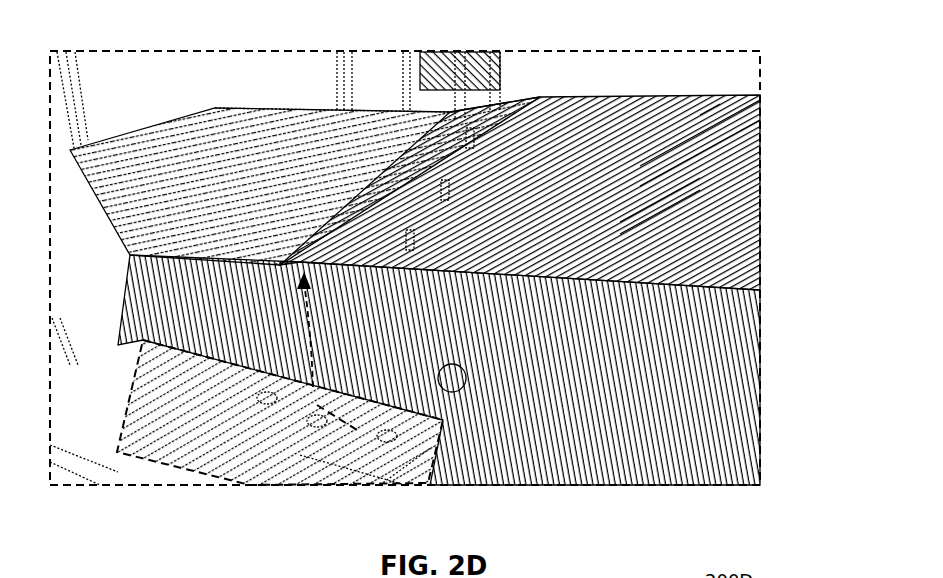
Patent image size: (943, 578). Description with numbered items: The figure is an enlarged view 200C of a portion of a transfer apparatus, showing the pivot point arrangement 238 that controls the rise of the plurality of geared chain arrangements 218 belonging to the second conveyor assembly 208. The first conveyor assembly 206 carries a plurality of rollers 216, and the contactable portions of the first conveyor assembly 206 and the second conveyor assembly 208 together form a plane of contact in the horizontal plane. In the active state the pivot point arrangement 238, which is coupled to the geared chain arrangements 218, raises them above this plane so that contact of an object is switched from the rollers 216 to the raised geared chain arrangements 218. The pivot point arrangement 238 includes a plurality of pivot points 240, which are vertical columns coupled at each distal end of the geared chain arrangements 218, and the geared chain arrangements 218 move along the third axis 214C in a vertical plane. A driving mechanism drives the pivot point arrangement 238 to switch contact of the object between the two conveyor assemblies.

The enlarged view 200C is at (762, 75).
The third axis 214C is at (303, 303).
The plurality of rollers 216 is at (621, 262).
The plurality of geared chain arrangements 218 is at (410, 245).
The first conveyor assembly 206 is at (716, 108).
The second conveyor assembly 208 is at (455, 373).
The pivot point arrangement 238 is at (188, 472).
The plurality of pivot points 240 is at (387, 438).